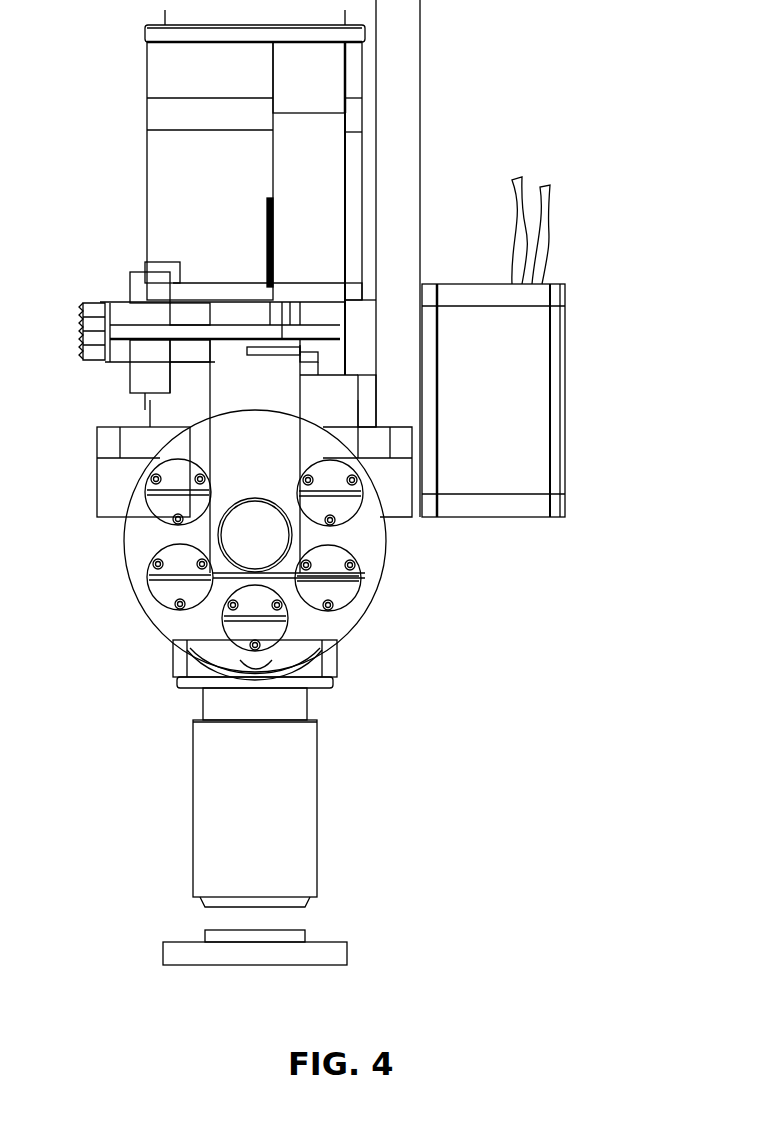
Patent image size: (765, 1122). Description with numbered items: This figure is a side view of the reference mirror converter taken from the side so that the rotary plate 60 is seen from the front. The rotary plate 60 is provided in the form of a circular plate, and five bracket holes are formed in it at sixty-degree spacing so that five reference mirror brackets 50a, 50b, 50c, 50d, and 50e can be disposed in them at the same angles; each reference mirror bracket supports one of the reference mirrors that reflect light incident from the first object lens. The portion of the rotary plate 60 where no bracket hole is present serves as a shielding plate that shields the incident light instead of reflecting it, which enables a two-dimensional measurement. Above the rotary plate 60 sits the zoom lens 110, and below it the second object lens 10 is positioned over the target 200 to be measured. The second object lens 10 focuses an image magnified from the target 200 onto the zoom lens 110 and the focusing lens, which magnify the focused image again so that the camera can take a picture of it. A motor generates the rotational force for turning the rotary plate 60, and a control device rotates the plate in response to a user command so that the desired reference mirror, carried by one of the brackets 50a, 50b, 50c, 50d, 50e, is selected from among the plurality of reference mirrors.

The zoom lens 110 is at (170, 201).
The rotary plate 60 is at (378, 538).
The reference mirror bracket 50a is at (330, 470).
The reference mirror bracket 50b is at (345, 598).
The reference mirror bracket 50c is at (248, 636).
The reference mirror bracket 50d is at (167, 598).
The reference mirror bracket 50e is at (167, 507).
The second object lens 10 is at (305, 812).
The target 200 is at (282, 940).